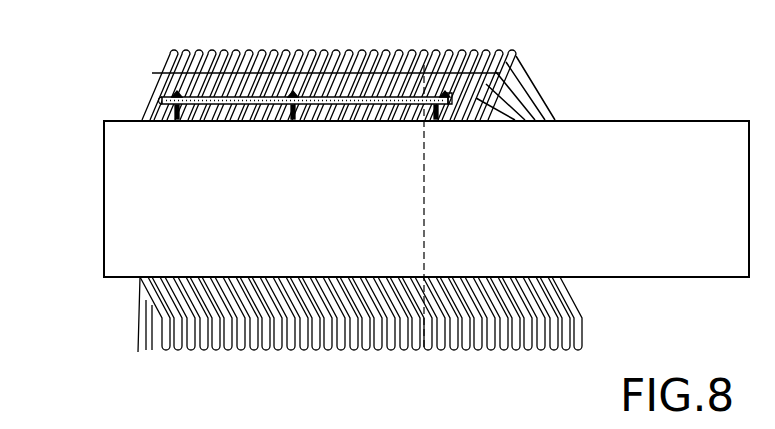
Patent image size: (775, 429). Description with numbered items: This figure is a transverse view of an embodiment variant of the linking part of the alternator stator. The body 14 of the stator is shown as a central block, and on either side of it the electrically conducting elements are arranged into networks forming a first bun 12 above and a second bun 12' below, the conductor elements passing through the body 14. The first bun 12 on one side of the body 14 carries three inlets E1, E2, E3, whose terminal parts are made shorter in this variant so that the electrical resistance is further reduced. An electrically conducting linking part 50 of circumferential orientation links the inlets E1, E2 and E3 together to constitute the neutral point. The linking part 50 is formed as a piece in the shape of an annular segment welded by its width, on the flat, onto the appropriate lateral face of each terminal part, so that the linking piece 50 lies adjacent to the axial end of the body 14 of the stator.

The first bun 12 is at (307, 71).
The second bun 12' is at (316, 333).
The body of the stator 14 is at (138, 211).
The linking part 50 is at (356, 100).
The inlet E1 is at (178, 122).
The inlet E2 is at (288, 122).
The inlet E3 is at (437, 122).